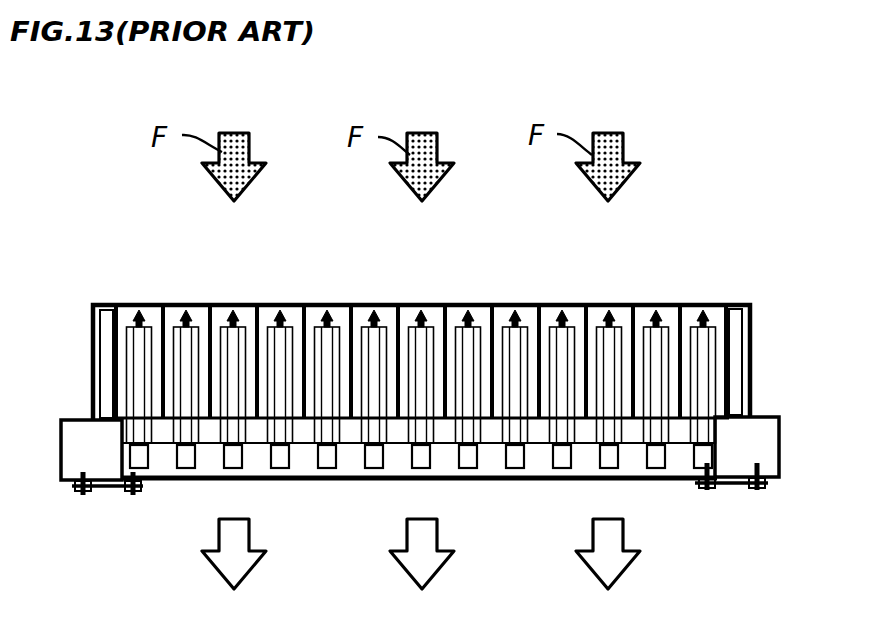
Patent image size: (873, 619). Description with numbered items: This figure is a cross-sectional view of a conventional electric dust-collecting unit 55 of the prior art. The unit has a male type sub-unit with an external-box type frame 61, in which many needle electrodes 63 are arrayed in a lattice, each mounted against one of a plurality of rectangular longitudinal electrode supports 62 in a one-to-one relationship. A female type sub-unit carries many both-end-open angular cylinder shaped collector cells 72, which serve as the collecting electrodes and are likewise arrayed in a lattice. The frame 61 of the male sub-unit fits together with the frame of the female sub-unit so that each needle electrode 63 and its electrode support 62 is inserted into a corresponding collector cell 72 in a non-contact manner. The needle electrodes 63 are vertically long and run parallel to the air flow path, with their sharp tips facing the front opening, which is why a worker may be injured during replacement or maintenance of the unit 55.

The electric dust-collecting unit 55 is at (502, 97).
The external-box type frame 61 is at (95, 338).
The electrode support 62 is at (222, 318).
The needle electrode 63 is at (232, 327).
The collector cell 72 is at (440, 315).